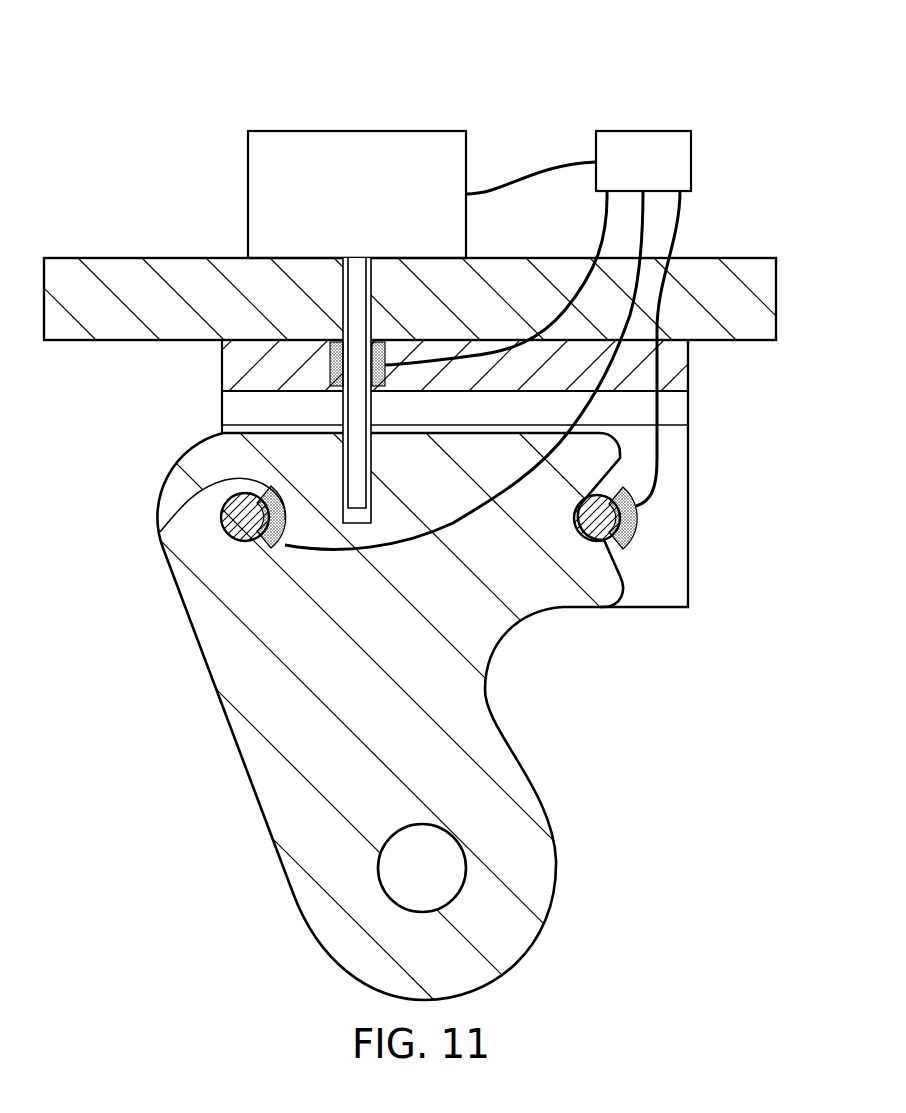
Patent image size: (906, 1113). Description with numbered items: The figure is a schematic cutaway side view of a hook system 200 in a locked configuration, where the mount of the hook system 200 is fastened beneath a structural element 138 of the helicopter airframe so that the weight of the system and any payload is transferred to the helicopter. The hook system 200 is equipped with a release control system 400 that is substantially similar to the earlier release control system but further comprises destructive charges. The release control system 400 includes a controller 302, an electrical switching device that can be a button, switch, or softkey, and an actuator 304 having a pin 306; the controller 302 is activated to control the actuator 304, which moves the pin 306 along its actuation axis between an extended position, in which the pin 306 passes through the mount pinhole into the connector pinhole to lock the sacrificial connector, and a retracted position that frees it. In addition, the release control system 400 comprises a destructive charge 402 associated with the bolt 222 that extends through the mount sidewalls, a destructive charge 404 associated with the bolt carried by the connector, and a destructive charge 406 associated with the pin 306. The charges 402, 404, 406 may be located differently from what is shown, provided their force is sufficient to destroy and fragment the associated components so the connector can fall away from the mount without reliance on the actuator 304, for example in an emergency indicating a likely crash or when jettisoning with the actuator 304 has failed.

The structural element 138 is at (731, 258).
The hook system 200 is at (127, 446).
The bolt 222 is at (577, 509).
The controller 302 is at (652, 131).
The actuator 304 is at (248, 192).
The pin 306 is at (358, 289).
The release control system 400 is at (350, 76).
The destructive charge 402 is at (641, 527).
The destructive charge 404 is at (160, 532).
The destructive charge 406 is at (333, 373).